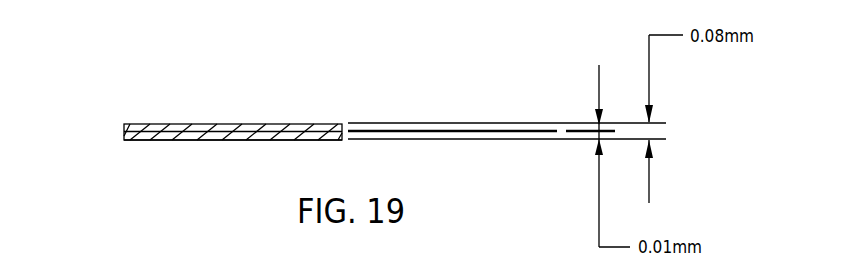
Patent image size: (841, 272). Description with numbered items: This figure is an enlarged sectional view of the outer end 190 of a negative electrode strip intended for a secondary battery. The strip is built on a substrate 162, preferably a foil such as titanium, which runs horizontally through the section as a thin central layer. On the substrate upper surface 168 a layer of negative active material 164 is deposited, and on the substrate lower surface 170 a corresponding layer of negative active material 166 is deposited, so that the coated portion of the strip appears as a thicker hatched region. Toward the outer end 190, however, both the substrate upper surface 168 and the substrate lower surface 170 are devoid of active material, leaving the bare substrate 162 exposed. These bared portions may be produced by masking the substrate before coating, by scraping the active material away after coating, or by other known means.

The outer end 190 is at (188, 62).
The negative active material 164 is at (215, 122).
The negative active material 166 is at (207, 140).
The substrate upper surface 168 is at (388, 126).
The substrate 162 is at (478, 127).
The substrate lower surface 170 is at (370, 139).